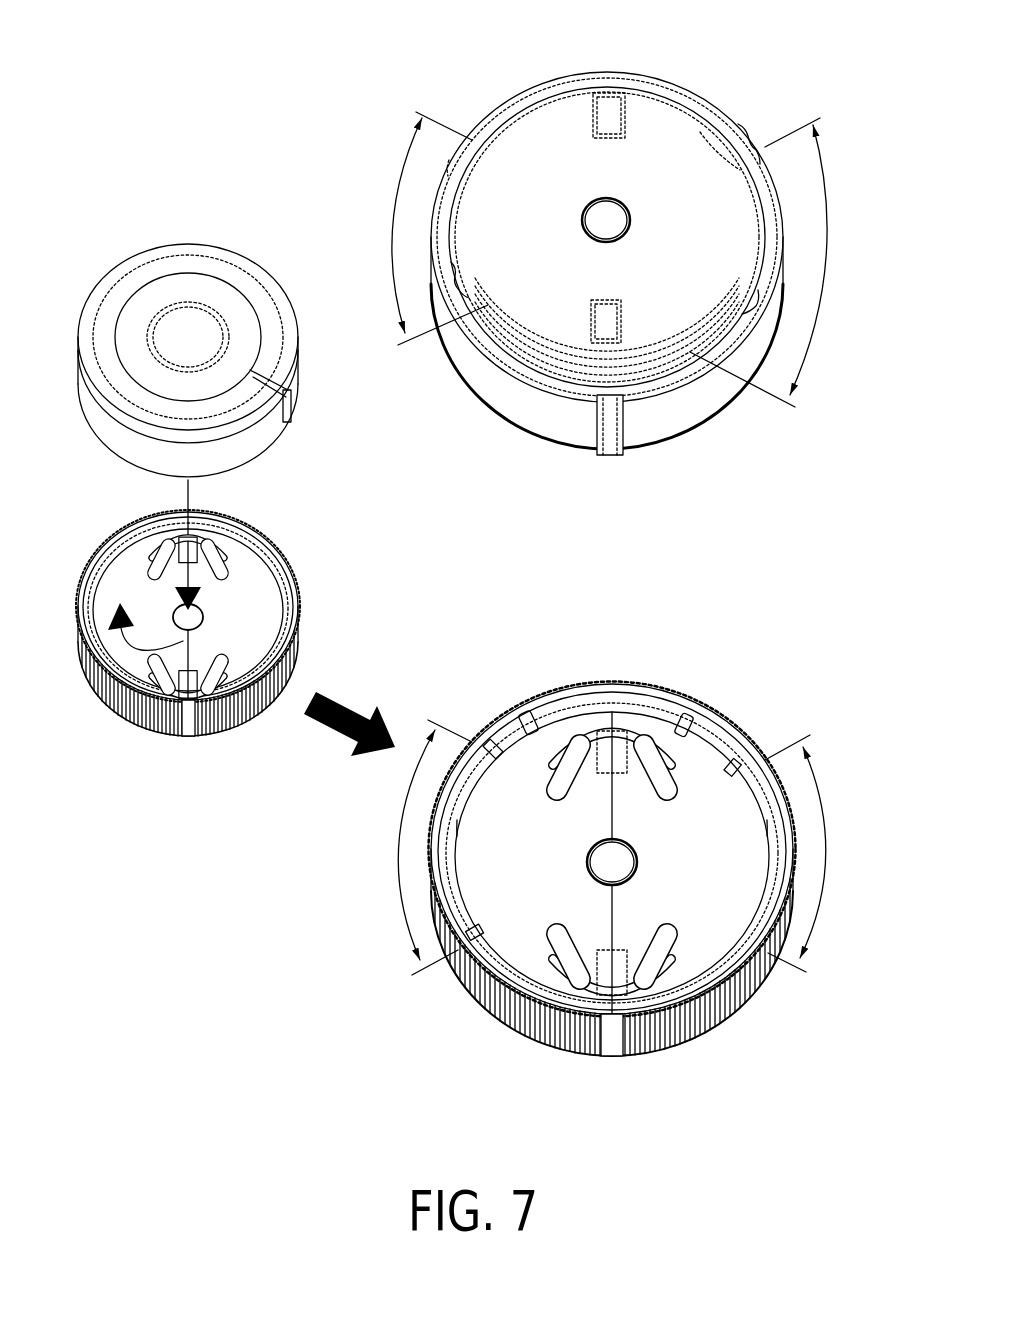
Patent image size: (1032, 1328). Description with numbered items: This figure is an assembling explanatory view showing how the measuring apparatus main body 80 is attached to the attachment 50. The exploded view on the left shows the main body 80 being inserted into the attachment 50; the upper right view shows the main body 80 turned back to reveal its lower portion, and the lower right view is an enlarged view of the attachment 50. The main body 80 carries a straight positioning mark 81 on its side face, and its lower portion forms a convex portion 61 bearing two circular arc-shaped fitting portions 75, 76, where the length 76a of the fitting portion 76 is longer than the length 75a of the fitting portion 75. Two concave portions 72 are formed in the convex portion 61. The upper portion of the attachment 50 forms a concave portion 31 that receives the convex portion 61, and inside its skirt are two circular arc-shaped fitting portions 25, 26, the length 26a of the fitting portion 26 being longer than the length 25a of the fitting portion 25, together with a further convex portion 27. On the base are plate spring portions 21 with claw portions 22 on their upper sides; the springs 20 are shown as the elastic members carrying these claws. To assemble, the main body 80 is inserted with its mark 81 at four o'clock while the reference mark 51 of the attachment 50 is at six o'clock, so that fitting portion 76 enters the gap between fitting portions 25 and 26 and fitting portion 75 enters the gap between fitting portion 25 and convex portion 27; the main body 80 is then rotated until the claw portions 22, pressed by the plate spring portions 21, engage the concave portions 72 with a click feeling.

The measuring apparatus main body 80 is at (673, 88).
The mark 81 is at (612, 456).
The convex portion 61 is at (702, 130).
The concave portion 72 is at (612, 140).
The fitting portion 75 is at (452, 220).
The fitting portion 76 is at (762, 220).
The length of fitting portion 75 75a is at (420, 228).
The length of fitting portion 76 76a is at (782, 262).
The attachment 50 is at (700, 702).
The mark 51 is at (612, 1065).
The convex portion 27 is at (524, 712).
The concave portion 31 is at (684, 714).
The claw portion 22 is at (613, 754).
The plate spring portion 21 is at (620, 784).
The elastic member 20 is at (553, 788).
The fitting portion 26 is at (452, 832).
The fitting portion 25 is at (766, 832).
The length of fitting portion 26 26a is at (412, 847).
The length of fitting portion 25 25a is at (819, 853).